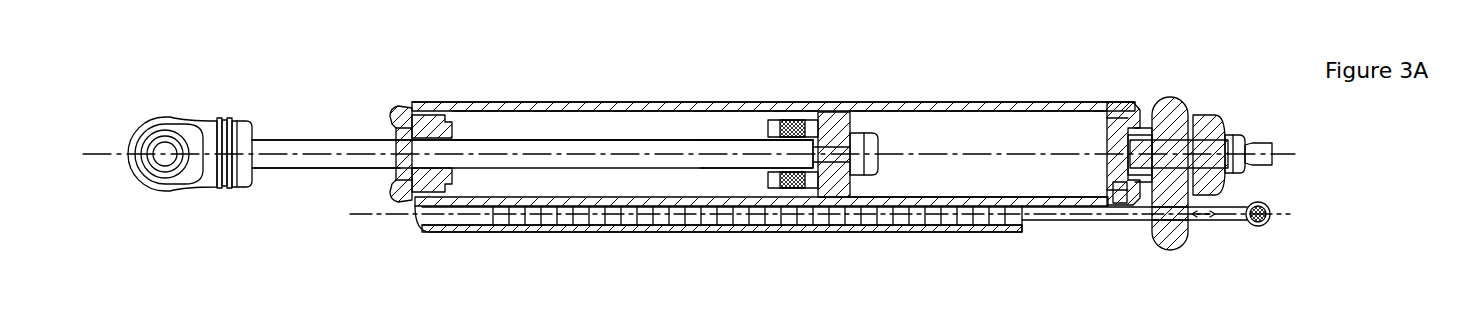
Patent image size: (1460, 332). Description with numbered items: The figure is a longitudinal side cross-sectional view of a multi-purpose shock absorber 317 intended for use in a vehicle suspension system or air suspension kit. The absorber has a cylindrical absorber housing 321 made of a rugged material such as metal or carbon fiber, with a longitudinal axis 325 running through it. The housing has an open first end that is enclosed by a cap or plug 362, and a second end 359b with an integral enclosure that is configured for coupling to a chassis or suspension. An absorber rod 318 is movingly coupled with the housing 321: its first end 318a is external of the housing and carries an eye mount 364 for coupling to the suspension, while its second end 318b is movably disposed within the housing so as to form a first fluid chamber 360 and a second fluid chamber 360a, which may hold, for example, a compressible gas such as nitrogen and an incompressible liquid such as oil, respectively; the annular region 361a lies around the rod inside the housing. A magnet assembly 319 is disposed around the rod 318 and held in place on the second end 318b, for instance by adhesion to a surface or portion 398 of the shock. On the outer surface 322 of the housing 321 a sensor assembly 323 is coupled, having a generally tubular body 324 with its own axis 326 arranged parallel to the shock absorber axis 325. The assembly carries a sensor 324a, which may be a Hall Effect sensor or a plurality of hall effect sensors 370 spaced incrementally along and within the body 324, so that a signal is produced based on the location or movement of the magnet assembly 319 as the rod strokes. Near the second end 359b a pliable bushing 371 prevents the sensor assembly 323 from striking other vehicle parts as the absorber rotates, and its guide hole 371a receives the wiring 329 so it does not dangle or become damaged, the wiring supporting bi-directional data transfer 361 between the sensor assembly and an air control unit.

The shock absorber 317 is at (240, 97).
The absorber rod 318 is at (347, 162).
The first end of the rod 318a is at (273, 170).
The second end of the rod 318b is at (737, 150).
The magnet assembly 319 is at (793, 127).
The absorber housing 321 is at (660, 103).
The outer surface of the absorber housing 322 is at (970, 93).
The sensor assembly 323 is at (480, 266).
The tubular body 324 is at (633, 227).
The sensor 324a is at (713, 218).
The longitudinal axis of the absorber 325 is at (287, 153).
The axis of the tubular body 326 is at (782, 218).
The wiring 329 is at (1067, 222).
The second end of the housing 359b is at (1130, 118).
The first fluid chamber 360 is at (885, 123).
The second fluid chamber 360a is at (443, 102).
The bi-directional data transfer 361 is at (1207, 218).
The annular chamber 361a is at (517, 130).
The cap or plug 362 is at (392, 118).
The eye mount 364 is at (150, 118).
The hall effect sensors 370 is at (940, 200).
The bushing 371 is at (1175, 107).
The guide hole 371a is at (1152, 222).
The surface or portion of the shock 398 is at (837, 167).